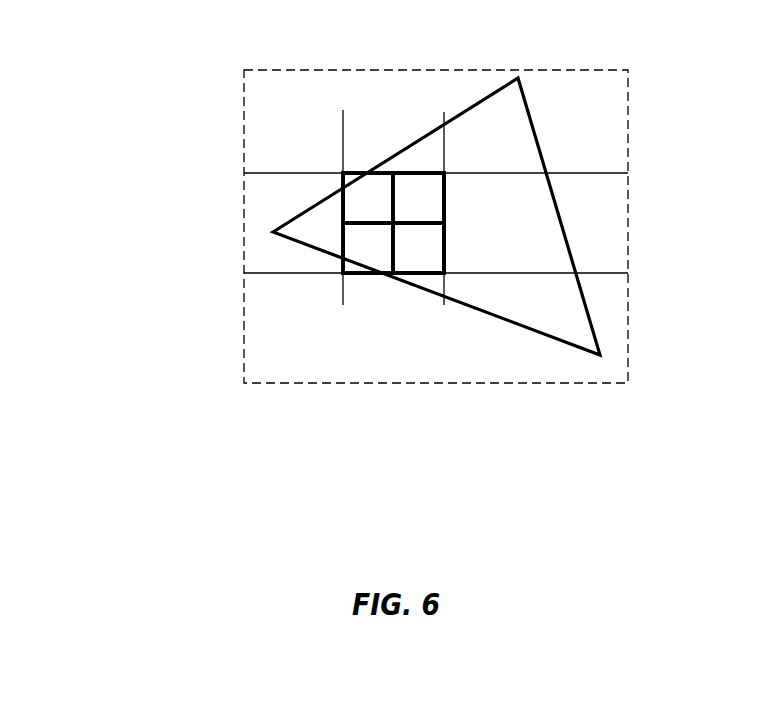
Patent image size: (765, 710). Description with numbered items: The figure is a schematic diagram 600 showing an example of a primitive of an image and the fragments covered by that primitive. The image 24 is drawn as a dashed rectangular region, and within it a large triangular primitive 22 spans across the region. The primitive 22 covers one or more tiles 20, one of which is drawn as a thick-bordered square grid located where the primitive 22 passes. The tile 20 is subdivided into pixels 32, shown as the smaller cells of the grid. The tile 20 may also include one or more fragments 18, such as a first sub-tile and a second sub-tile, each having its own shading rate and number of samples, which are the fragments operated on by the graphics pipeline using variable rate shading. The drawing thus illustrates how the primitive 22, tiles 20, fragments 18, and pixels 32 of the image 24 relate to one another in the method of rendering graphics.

The rendering example 600 is at (106, 88).
The image 24 is at (307, 70).
The primitive 22 is at (320, 252).
The tile 20 is at (460, 233).
The pixel 32 is at (446, 268).
The fragment 18 is at (368, 273).